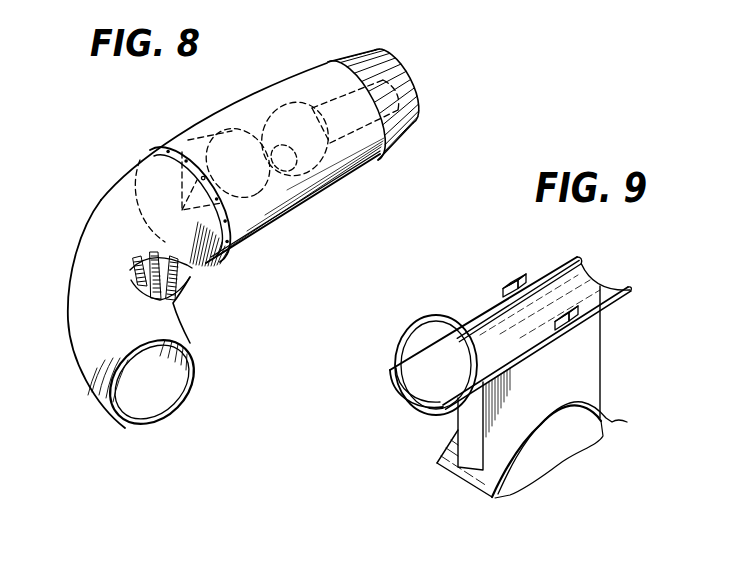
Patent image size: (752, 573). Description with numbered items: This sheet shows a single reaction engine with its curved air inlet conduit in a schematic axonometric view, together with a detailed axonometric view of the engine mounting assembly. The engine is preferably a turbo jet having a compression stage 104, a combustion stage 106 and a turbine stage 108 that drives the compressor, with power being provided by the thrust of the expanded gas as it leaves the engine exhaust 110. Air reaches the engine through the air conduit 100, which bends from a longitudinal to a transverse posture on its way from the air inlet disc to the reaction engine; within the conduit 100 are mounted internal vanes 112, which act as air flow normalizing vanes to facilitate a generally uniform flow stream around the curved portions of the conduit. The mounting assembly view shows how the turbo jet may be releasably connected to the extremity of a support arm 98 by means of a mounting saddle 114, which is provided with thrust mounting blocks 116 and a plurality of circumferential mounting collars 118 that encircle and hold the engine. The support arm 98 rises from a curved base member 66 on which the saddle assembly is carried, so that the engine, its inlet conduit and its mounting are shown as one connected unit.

In FIG. 8, the air conduit 100 is at (74, 357).
In FIG. 8, the compression stage 104 is at (225, 133).
In FIG. 8, the combustion stage 106 is at (287, 190).
In FIG. 8, the turbine stage 108 is at (292, 102).
In FIG. 8, the engine exhaust 110 is at (416, 80).
In FIG. 8, the internal vanes 112 is at (133, 268).
In FIG. 9, the mounting saddle 114 is at (406, 408).
In FIG. 9, the thrust mounting blocks 116 is at (537, 255).
In FIG. 9, the circumferential mounting collars 118 is at (447, 325).
In FIG. 9, the support arm 98 is at (600, 386).
In FIG. 9, the curved base 66 is at (627, 422).